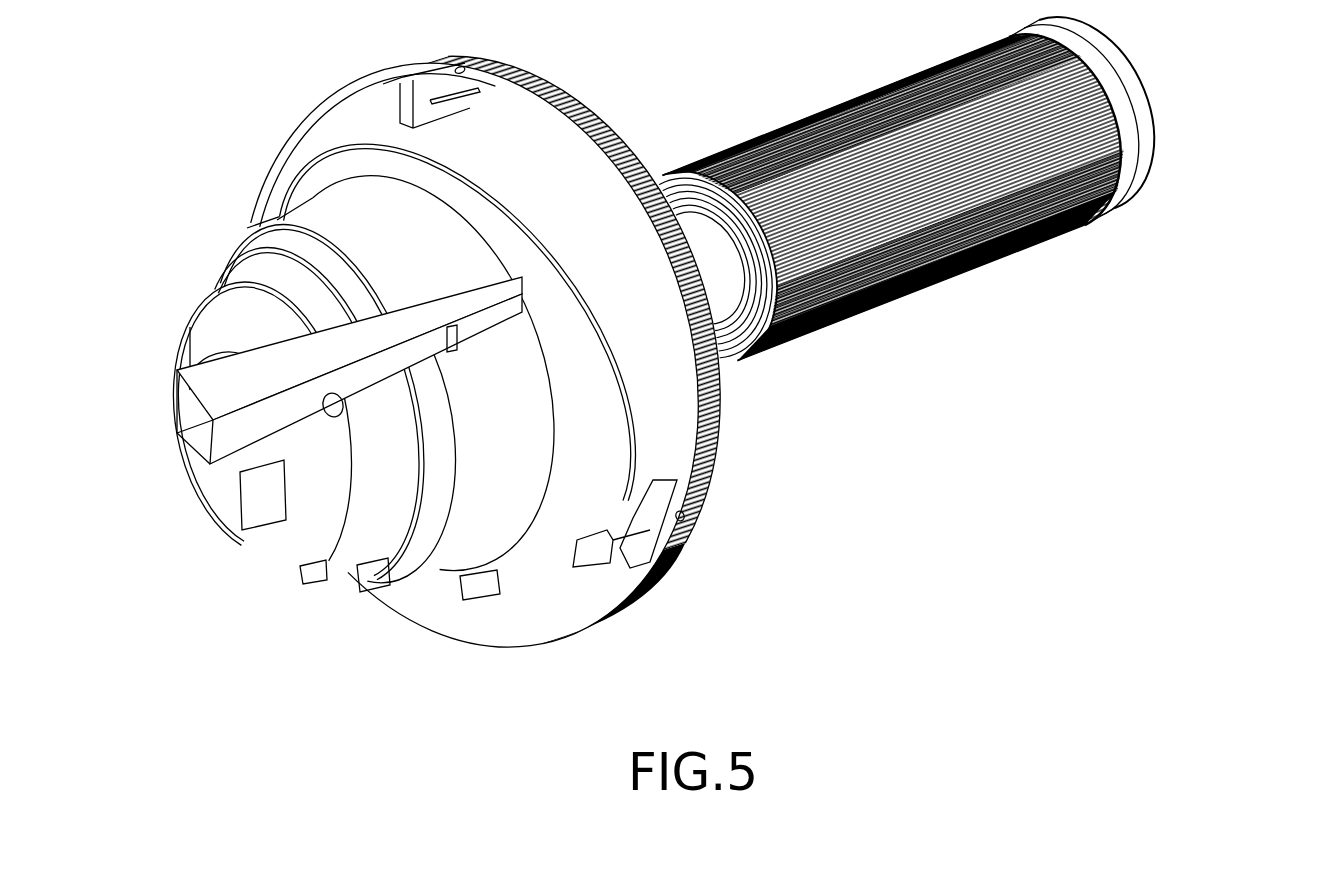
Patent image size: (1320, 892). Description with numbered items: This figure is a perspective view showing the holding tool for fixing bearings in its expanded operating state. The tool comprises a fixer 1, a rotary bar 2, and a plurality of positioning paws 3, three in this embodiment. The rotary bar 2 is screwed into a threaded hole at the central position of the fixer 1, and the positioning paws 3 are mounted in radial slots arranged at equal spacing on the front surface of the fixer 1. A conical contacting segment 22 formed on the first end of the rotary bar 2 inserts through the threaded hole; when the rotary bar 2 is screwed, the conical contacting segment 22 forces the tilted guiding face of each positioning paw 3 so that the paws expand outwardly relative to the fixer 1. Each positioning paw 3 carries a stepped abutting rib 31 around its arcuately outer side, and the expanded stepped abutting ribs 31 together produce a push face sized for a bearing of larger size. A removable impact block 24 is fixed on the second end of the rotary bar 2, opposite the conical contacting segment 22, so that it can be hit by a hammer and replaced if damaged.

The fixer 1 is at (713, 517).
The rotary bar 2 is at (933, 277).
The positioning paw 3 is at (262, 498).
The conical contacting segment 22 is at (292, 274).
The impact block 24 is at (1155, 113).
The stepped abutting rib 31 is at (330, 540).